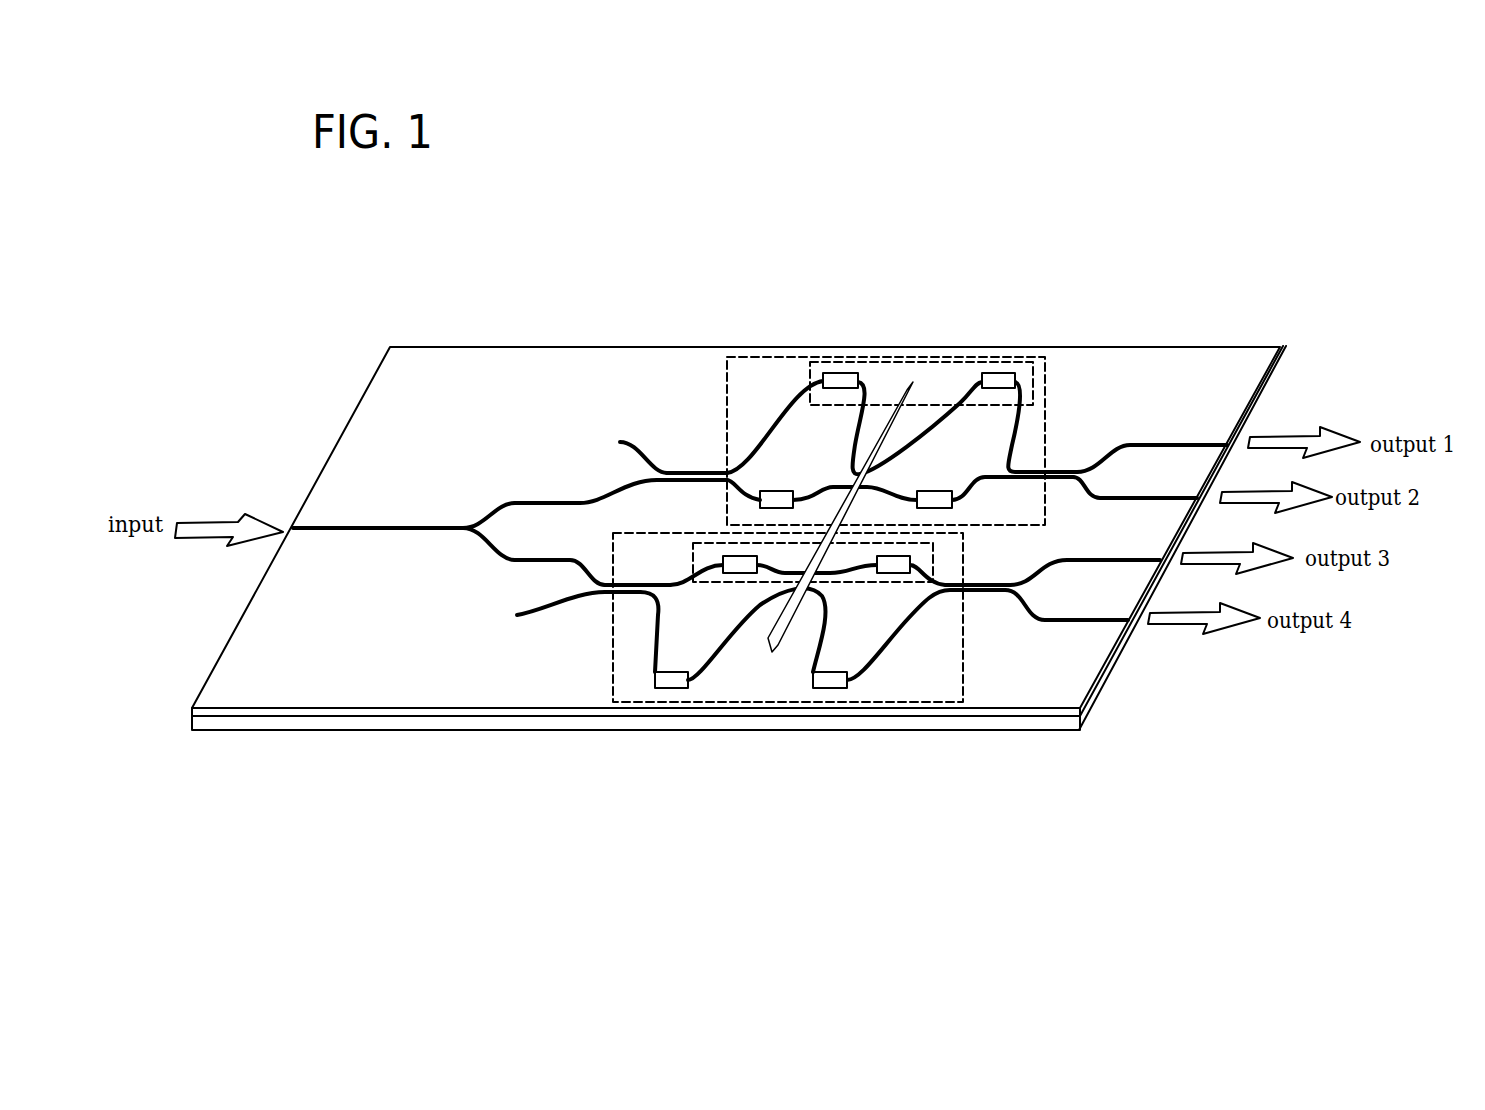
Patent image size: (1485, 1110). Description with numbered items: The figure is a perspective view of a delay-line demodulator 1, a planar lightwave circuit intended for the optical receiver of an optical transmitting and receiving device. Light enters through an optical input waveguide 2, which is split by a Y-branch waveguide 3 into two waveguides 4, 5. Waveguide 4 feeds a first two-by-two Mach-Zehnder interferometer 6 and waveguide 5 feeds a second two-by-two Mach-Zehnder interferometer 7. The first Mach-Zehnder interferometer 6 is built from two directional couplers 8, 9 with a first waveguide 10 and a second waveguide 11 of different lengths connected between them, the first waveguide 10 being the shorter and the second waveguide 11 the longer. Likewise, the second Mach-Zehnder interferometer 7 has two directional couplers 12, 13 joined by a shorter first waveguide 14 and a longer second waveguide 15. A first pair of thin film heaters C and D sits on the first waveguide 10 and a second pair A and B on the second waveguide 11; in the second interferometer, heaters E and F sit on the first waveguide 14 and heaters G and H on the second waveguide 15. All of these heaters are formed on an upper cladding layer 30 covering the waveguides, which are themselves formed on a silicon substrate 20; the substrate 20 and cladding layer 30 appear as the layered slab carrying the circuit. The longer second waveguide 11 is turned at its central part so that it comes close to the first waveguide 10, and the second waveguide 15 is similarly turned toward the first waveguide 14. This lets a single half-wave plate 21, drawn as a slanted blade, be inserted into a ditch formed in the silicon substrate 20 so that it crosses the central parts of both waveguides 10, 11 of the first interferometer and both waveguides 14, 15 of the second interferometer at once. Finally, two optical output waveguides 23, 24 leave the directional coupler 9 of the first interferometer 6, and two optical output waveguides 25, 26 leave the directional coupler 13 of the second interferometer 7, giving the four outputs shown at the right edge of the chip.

The delay-line demodulator 1 is at (653, 302).
The optical input waveguide 2 is at (343, 527).
The Y-branch waveguide 3 is at (462, 541).
The waveguide 4 is at (547, 502).
The waveguide 5 is at (520, 563).
The first 2×2 Mach-Zehnder interferometer 6 is at (867, 444).
The second 2×2 Mach-Zehnder interferometer 7 is at (766, 617).
The directional coupler 8 is at (690, 470).
The directional coupler 9 is at (1057, 470).
The first waveguide 10 is at (743, 490).
The second waveguide 11 is at (743, 462).
The directional coupler 12 is at (627, 603).
The directional coupler 13 is at (980, 595).
The first waveguide 14 is at (663, 577).
The second waveguide 15 is at (710, 660).
The silicon substrate 20 is at (990, 720).
The half-wave plate 21 is at (893, 393).
The optical output waveguide 23 is at (1172, 445).
The optical output waveguide 24 is at (1147, 498).
The optical output waveguide 25 is at (1122, 560).
The optical output waveguide 26 is at (1097, 620).
The upper cladding layer 30 is at (1057, 717).